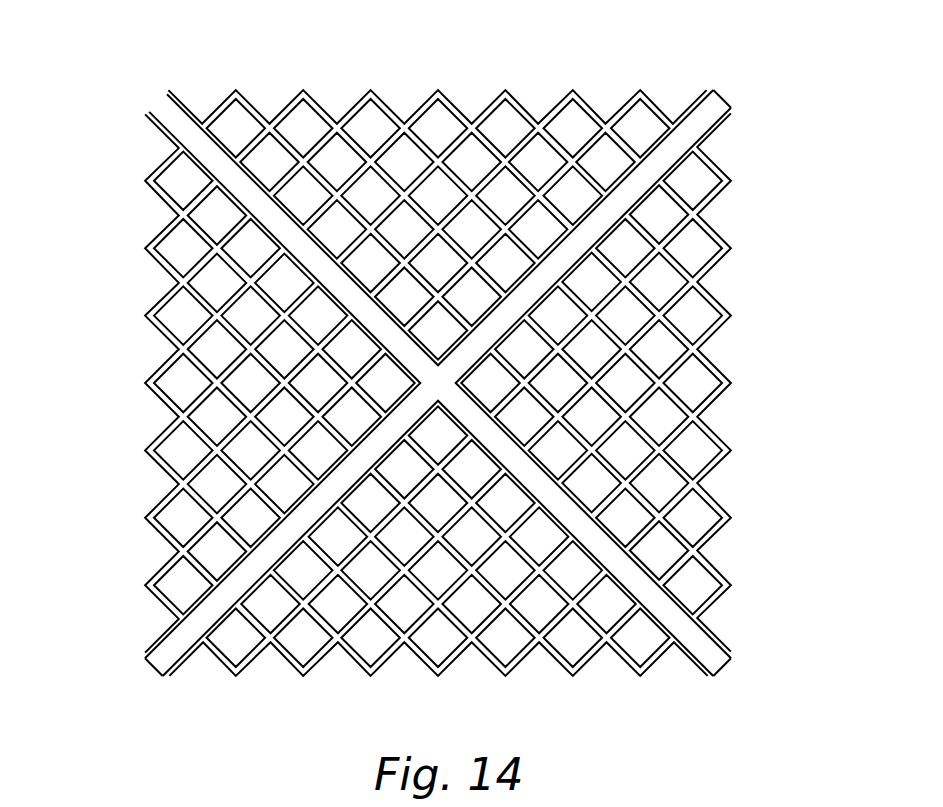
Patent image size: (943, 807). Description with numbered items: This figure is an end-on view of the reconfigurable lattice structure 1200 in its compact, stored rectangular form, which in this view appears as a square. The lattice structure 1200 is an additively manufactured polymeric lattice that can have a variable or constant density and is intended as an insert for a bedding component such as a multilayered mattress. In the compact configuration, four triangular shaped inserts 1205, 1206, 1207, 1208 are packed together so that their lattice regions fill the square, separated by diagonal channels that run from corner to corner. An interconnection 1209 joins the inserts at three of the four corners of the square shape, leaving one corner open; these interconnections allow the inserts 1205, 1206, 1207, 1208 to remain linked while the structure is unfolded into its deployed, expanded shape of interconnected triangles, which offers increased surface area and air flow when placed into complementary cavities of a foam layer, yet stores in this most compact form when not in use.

The reconfigurable lattice structure 1200 is at (266, 68).
The triangular shaped insert 1205 is at (140, 353).
The triangular shaped insert 1206 is at (410, 686).
The triangular shaped insert 1207 is at (738, 413).
The triangular shaped insert 1208 is at (467, 88).
The interconnection 1209 is at (730, 93).